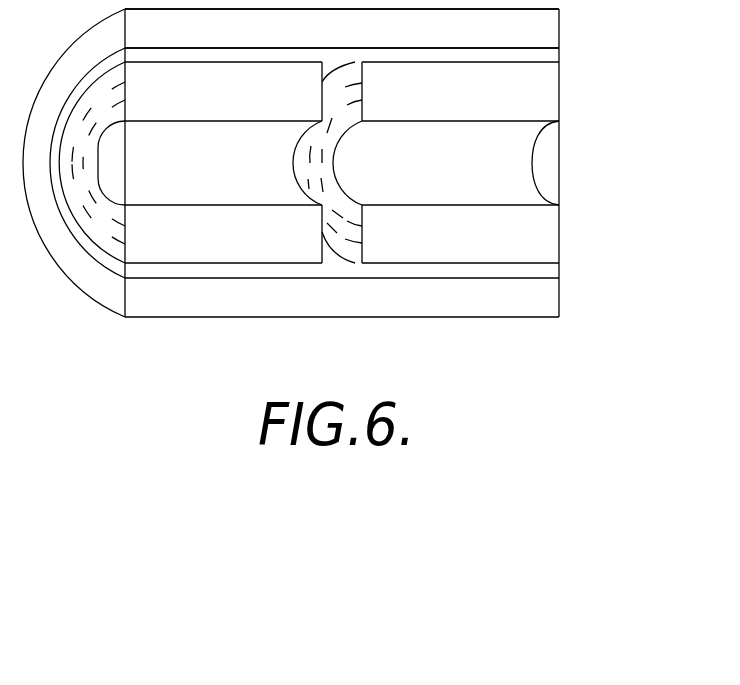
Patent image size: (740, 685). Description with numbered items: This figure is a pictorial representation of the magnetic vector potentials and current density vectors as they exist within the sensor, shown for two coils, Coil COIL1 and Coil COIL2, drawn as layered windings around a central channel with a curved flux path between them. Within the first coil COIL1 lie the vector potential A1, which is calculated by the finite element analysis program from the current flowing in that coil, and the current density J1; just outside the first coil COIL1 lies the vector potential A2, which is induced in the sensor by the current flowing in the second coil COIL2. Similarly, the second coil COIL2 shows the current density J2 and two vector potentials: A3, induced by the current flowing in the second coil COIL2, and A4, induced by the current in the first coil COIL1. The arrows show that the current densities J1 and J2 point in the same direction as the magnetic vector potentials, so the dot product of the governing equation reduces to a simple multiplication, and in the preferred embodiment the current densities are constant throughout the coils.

The current density J1 is at (228, 77).
The current density J2 is at (585, 80).
The magnetic vector potential A1 is at (258, 77).
The magnetic vector potential A2 is at (230, 33).
The magnetic vector potential A3 is at (488, 77).
The magnetic vector potential A4 is at (540, 89).
The first coil COIL1 is at (223, 234).
The second coil COIL2 is at (460, 234).